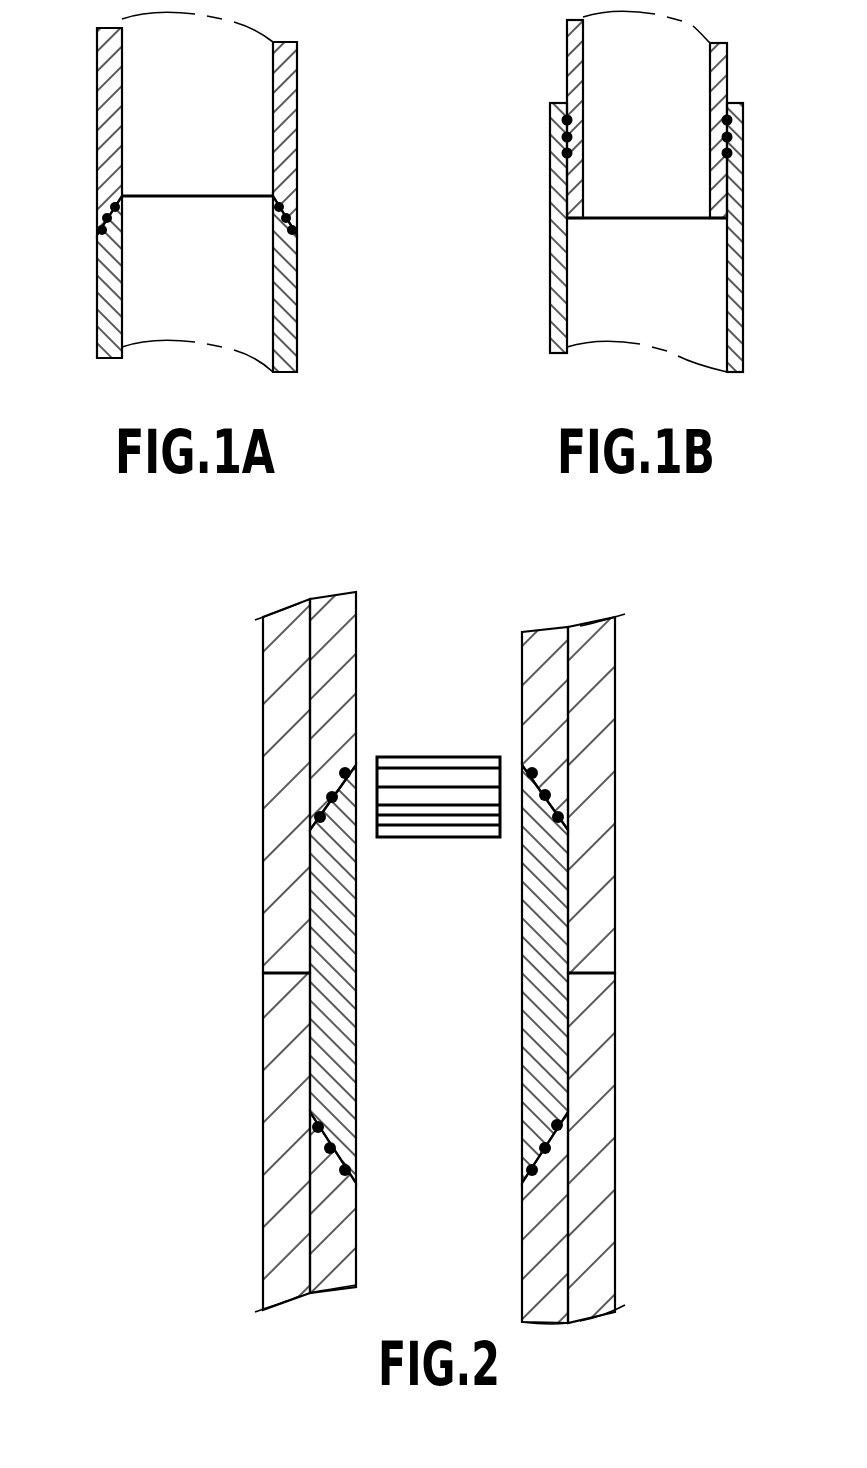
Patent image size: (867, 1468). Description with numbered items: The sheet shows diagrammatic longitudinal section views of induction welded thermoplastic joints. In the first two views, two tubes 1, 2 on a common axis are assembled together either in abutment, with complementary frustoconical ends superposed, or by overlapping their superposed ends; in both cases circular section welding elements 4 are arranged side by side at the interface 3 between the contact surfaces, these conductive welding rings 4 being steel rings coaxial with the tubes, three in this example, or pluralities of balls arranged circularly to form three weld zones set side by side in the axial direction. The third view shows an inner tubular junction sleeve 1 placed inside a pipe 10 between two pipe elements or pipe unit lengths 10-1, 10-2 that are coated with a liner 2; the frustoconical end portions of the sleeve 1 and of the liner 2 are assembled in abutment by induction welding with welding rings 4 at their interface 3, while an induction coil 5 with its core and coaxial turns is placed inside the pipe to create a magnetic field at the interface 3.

In FIG. 1A, the tube / tubular junction sleeve 1 is at (104, 297).
In FIG. 1B, the tube / tubular junction sleeve 1 is at (563, 230).
In FIG. 2, the tube / tubular junction sleeve 1 is at (337, 1033).
In FIG. 1A, the tube / liner 2 is at (107, 123).
In FIG. 1B, the tube / liner 2 is at (578, 70).
In FIG. 2, the tube / liner 2 is at (327, 683).
In FIG. 1A, the interface 3 is at (104, 226).
In FIG. 1B, the interface 3 is at (563, 125).
In FIG. 2, the interface 3 is at (320, 795).
In FIG. 1A, the welding rings 4 is at (289, 212).
In FIG. 1B, the welding rings 4 is at (738, 121).
In FIG. 2, the welding rings 4 is at (313, 815).
In FIG. 2, the induction coil 5 is at (453, 757).
In FIG. 2, the pipe 10 is at (383, 961).
In FIG. 2, the pipe unit length 10-1 is at (278, 938).
In FIG. 2, the pipe unit length 10-2 is at (409, 1148).